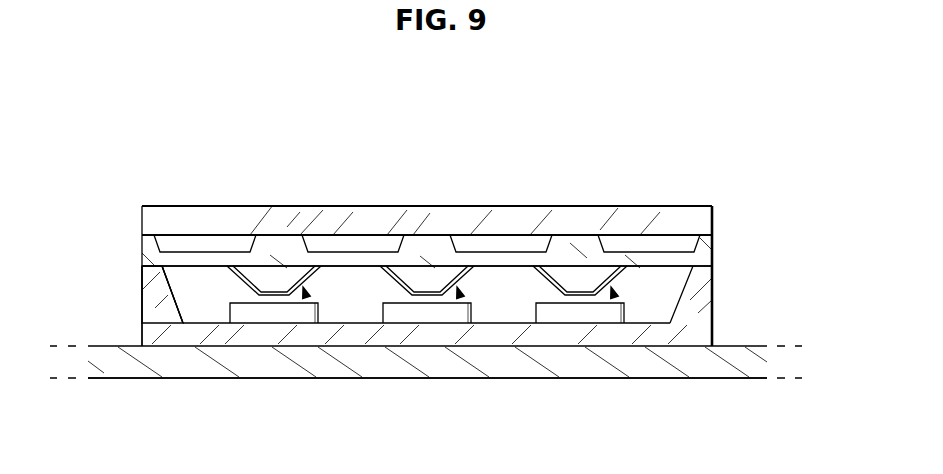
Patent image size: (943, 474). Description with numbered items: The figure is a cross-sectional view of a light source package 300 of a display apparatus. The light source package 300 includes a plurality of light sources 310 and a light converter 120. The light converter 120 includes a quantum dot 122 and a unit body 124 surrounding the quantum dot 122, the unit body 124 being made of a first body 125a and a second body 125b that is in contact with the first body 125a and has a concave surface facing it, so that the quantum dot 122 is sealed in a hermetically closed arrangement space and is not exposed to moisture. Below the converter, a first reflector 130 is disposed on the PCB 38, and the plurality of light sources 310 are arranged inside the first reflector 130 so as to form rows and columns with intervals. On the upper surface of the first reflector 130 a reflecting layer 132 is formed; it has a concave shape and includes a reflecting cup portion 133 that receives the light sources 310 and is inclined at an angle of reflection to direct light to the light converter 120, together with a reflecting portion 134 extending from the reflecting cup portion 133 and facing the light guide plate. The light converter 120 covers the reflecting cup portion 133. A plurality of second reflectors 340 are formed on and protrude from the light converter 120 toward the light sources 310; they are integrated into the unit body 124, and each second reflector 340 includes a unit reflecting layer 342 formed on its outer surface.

The light source package 300 is at (120, 247).
The light converter 120 is at (455, 205).
The unit body 124 is at (797, 206).
The first body 125a is at (712, 206).
The second body 125b is at (712, 255).
The quantum dot 122 is at (649, 245).
The unit reflecting layer 342 is at (565, 270).
The light sources 310 is at (590, 318).
The second reflectors 340 is at (615, 299).
The first reflector 130 is at (697, 349).
The PCB 38 is at (537, 372).
The reflecting layer 132 is at (207, 420).
The reflecting cup portion 133 is at (175, 299).
The reflecting portion 134 is at (146, 262).